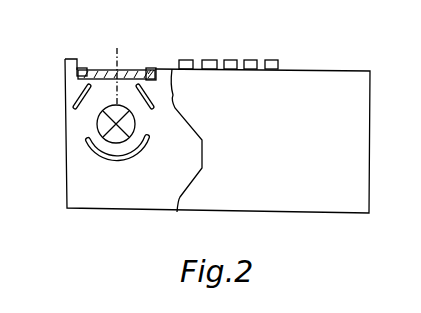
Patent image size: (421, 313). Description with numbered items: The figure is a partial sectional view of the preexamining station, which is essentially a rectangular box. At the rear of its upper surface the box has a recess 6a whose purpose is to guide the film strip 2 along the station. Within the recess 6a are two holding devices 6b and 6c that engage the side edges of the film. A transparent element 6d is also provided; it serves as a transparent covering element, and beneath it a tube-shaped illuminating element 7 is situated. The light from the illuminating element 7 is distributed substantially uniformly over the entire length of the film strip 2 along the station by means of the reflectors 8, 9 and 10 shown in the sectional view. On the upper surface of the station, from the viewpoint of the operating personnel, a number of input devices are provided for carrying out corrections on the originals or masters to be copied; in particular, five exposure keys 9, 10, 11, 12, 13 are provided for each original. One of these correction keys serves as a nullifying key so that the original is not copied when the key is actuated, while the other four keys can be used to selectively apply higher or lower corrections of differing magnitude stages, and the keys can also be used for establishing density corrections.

The strip 2 is at (123, 70).
The recess 6a is at (78, 59).
The holding device 6b is at (82, 68).
The holding device 6c is at (152, 68).
The transparent element 6d is at (84, 96).
The illuminating element 7 is at (135, 123).
The reflector 8 is at (141, 143).
The reflector / exposure key 9 is at (185, 60).
The reflector / exposure key 10 is at (217, 60).
The exposure key 11 is at (240, 60).
The exposure key 12 is at (257, 60).
The exposure key 13 is at (275, 60).